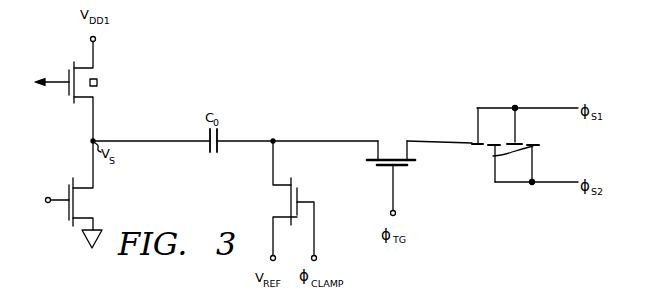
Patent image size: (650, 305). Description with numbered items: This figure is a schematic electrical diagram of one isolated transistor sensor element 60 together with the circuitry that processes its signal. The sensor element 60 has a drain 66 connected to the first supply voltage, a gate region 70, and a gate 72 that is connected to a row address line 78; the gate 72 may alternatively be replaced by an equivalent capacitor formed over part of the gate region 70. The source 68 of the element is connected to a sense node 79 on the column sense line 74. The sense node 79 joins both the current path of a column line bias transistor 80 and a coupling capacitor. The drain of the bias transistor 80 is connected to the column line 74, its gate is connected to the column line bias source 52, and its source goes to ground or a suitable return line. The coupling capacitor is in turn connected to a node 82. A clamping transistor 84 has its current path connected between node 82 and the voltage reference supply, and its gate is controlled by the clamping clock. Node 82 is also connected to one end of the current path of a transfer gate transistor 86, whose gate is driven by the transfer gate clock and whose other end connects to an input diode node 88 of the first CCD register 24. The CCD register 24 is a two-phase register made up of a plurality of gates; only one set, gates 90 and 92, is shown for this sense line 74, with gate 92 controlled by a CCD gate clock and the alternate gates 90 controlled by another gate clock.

The first CCD register 24 is at (525, 176).
The column line bias source 52 is at (48, 197).
The transistor sensor element 60 is at (105, 87).
The drain 66 is at (97, 62).
The source 68 is at (86, 101).
The gate region 70 is at (98, 83).
The gate 72 is at (68, 95).
The column sense line 74 is at (172, 143).
The row line 78 is at (68, 73).
The sense node 79 is at (97, 138).
The column line bias transistor 80 is at (64, 196).
The node 82 is at (273, 141).
The clamping transistor 84 is at (298, 187).
The transfer gate transistor 86 is at (405, 168).
The input diode node 88 is at (474, 143).
The gate 90 is at (496, 148).
The gate 92 is at (516, 147).